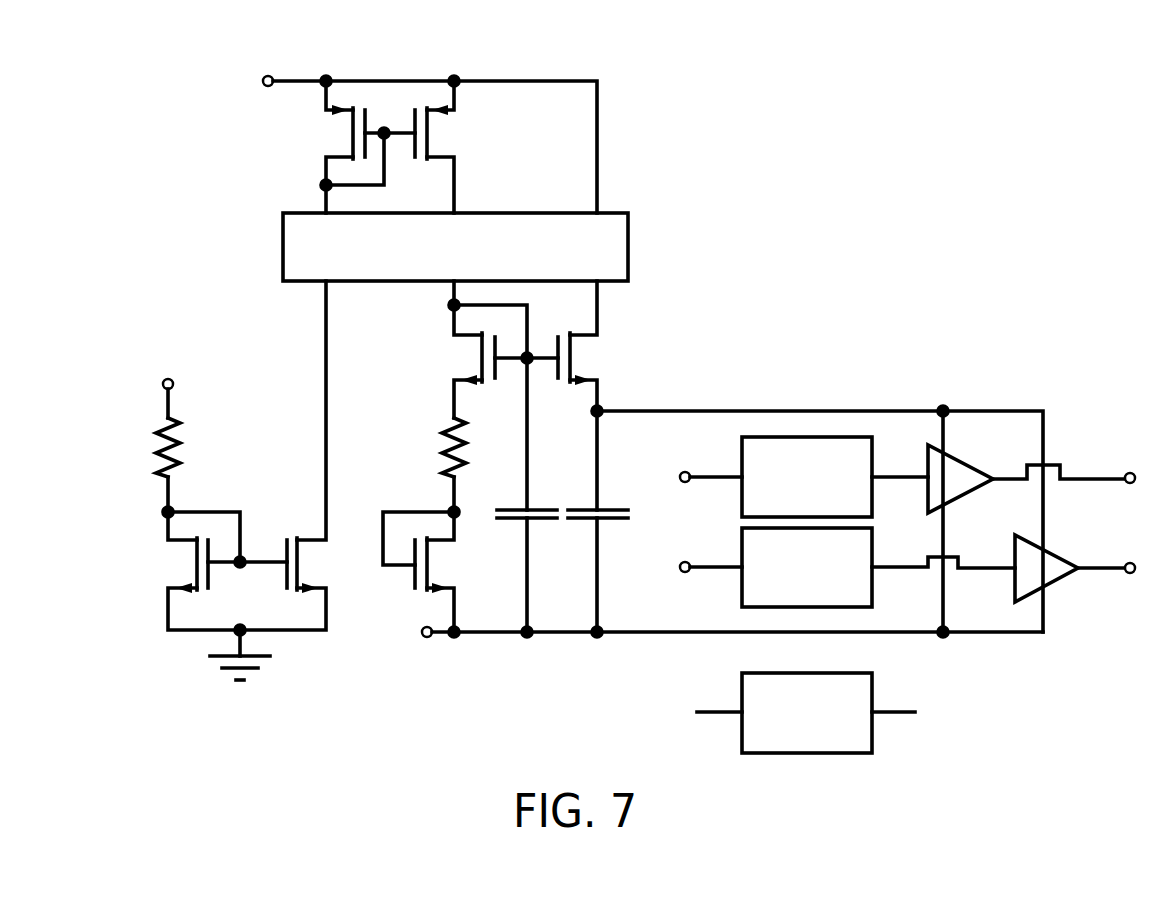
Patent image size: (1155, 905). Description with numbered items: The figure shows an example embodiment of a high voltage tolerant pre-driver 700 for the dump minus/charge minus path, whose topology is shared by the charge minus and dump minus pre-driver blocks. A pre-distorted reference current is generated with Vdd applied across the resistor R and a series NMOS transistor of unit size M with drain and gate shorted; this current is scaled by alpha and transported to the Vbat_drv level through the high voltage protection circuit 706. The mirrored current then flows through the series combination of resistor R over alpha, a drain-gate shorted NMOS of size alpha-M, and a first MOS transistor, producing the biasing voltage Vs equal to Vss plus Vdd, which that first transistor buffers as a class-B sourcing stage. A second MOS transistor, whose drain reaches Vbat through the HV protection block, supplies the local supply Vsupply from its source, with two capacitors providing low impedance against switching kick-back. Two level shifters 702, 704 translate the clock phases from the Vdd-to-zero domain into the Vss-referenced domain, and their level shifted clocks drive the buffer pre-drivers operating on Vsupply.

The high voltage tolerant pre-driver 700 is at (873, 105).
The level shifter 702 is at (750, 607).
The level shifter 704 is at (850, 437).
The high voltage protection circuit 706 is at (608, 213).